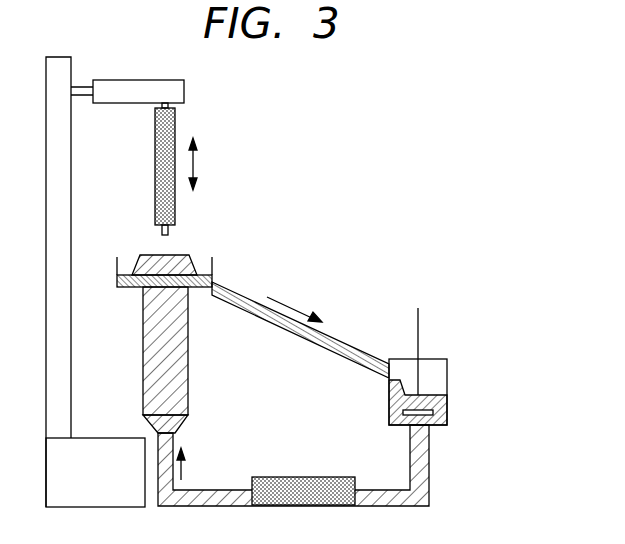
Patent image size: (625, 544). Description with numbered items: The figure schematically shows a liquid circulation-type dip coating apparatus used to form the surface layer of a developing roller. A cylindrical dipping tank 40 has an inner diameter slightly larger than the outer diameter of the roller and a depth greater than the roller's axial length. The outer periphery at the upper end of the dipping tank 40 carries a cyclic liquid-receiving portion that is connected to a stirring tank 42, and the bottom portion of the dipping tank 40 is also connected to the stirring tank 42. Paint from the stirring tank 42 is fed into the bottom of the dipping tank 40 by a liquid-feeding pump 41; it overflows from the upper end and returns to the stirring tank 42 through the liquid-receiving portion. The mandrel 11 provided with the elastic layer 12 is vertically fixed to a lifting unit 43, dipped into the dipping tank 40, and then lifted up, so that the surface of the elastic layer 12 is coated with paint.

The mandrel 11 is at (168, 231).
The elastic layer 12 is at (175, 212).
The dipping tank 40 is at (147, 349).
The liquid-feeding pump 41 is at (302, 477).
The stirring tank 42 is at (447, 410).
The lifting unit 43 is at (184, 89).